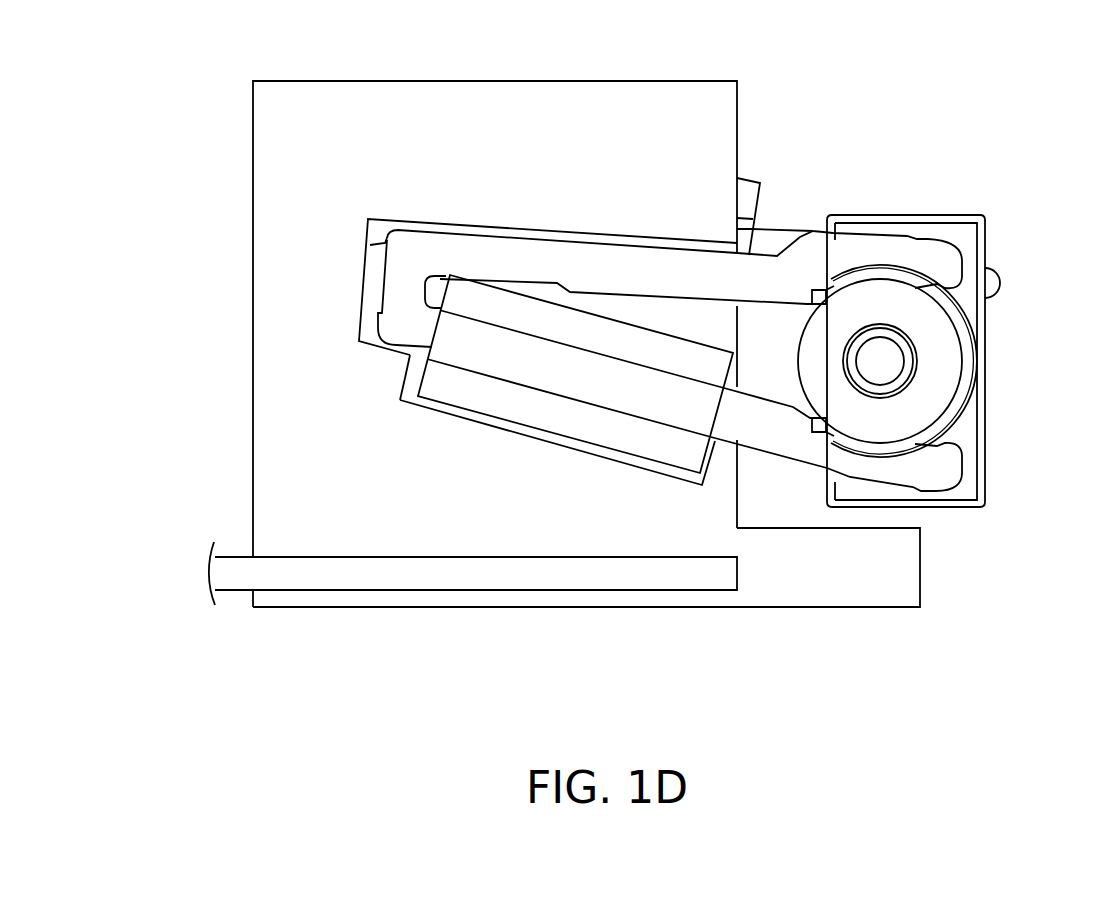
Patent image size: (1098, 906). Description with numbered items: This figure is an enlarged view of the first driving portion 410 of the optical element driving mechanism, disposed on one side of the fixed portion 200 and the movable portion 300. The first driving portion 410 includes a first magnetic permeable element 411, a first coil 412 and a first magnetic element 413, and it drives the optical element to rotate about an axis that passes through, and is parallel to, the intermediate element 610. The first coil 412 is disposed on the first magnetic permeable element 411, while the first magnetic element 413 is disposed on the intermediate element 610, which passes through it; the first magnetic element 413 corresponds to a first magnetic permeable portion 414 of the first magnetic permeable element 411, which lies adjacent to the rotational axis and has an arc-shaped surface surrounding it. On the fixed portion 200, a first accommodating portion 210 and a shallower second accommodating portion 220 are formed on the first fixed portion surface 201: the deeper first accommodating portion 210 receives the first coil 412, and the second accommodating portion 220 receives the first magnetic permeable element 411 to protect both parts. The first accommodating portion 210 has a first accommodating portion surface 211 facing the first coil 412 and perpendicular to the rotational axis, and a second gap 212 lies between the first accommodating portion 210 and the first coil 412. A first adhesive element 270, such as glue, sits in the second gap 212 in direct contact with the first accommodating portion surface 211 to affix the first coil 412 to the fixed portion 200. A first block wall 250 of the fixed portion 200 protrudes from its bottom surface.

The fixed portion 200 is at (302, 134).
The first fixed portion surface 201 is at (472, 515).
The first accommodating portion 210 is at (402, 399).
The first accommodating portion surface 211 is at (410, 357).
The second gap 212 is at (414, 374).
The second accommodating portion 220 is at (378, 233).
The first block wall 250 is at (877, 568).
The first adhesive element 270 is at (456, 407).
The movable portion 300 is at (906, 232).
The first driving portion 410 is at (578, 224).
The first magnetic permeable element 411 is at (775, 282).
The first coil 412 is at (567, 410).
The first magnetic element 413 is at (918, 317).
The first magnetic permeable portion 414 is at (760, 420).
The intermediate element 610 is at (880, 362).